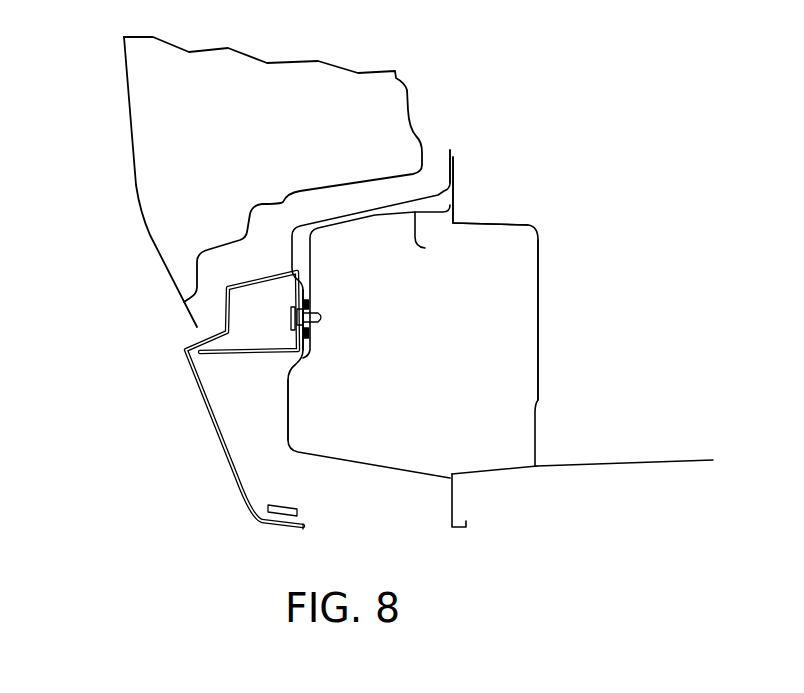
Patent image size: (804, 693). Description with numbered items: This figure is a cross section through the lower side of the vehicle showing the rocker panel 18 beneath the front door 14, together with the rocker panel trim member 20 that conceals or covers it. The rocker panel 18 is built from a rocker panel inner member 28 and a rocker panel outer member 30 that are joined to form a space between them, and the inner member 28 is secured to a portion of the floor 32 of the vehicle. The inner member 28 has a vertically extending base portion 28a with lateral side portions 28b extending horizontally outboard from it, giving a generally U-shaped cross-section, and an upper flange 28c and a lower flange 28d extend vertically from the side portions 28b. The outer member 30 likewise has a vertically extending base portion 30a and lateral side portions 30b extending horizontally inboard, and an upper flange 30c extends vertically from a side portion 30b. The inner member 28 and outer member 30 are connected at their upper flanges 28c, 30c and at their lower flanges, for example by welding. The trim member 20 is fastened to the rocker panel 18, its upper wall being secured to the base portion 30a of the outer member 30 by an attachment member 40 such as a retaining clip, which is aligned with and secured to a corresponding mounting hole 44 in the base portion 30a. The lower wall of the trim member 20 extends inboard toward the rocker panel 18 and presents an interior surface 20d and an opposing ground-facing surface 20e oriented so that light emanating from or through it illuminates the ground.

The front door 14 is at (131, 128).
The rocker panel 18 is at (512, 320).
The rocker panel trim member 20 is at (201, 445).
The interior surface 20d is at (255, 505).
The ground-facing surface 20e is at (260, 524).
The rocker panel inner member 28 is at (549, 351).
The base portion 28a is at (538, 298).
The lateral side portions 28b is at (497, 225).
The upper flange 28c is at (455, 176).
The lower flange 28d is at (452, 500).
The rocker panel outer member 30 is at (390, 303).
The base portion 30a is at (312, 267).
The lateral side portions 30b is at (425, 248).
The upper flange 30c is at (450, 150).
The floor 32 is at (676, 460).
The attachment member 40 is at (324, 319).
The mounting holes 44 is at (315, 332).